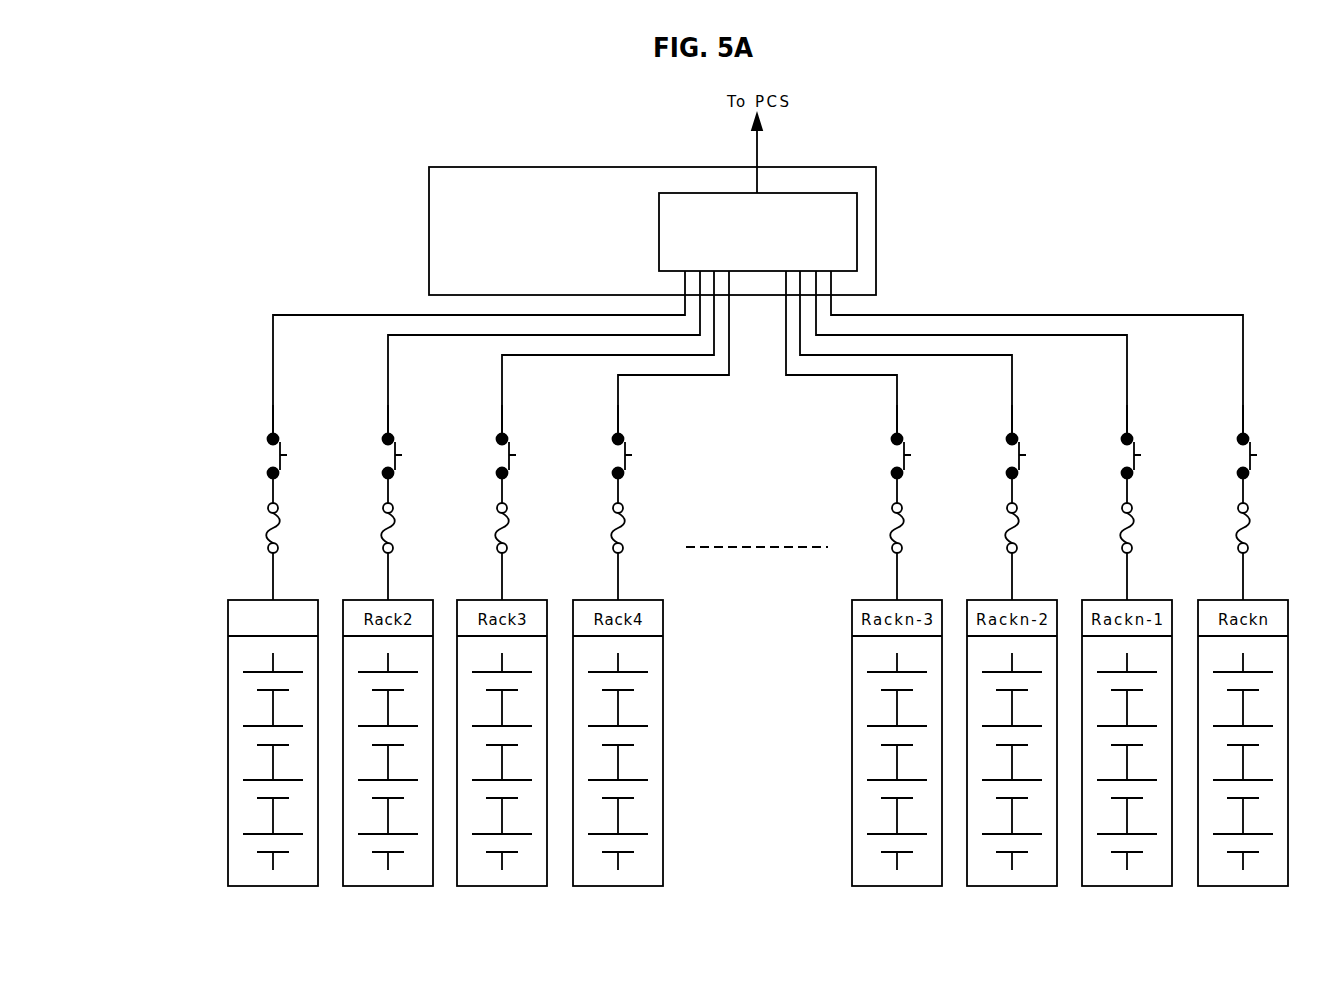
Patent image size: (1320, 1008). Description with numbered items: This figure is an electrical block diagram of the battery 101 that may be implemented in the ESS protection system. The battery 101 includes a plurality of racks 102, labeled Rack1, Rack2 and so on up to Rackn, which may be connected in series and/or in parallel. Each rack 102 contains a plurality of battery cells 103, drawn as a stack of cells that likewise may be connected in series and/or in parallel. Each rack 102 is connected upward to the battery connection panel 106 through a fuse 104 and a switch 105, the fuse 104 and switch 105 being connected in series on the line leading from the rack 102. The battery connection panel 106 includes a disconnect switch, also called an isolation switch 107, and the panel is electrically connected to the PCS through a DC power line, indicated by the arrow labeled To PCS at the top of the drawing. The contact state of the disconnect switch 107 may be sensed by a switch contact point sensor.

The battery 101 is at (200, 738).
The rack 102 is at (227, 616).
The battery cell 103 is at (241, 841).
The fuse 104 is at (262, 524).
The switch 105 is at (262, 454).
The battery connection panel 106 is at (610, 167).
The disconnect switch (isolation switch) 107 is at (858, 232).